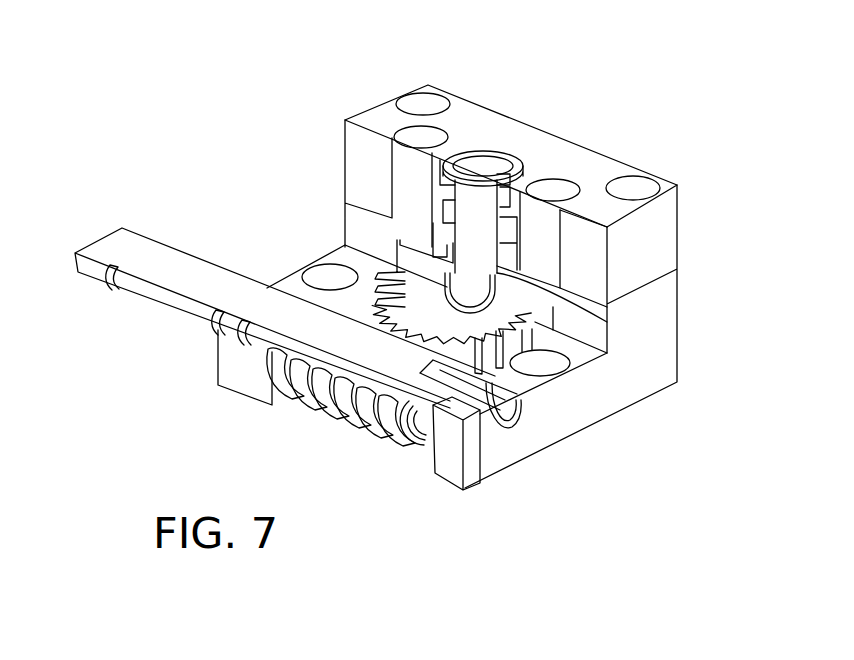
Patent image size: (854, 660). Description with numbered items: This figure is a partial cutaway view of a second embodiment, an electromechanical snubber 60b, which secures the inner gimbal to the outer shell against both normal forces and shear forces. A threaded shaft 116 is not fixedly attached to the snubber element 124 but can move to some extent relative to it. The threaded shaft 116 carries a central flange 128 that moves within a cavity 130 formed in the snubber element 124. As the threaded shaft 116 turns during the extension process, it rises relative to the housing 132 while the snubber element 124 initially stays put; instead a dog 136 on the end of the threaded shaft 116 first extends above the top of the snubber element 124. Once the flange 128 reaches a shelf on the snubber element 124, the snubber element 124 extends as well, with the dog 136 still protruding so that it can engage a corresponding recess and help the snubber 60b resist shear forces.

The electromechanical snubber 60b is at (195, 143).
The threaded shaft 116 is at (505, 160).
The snubber element 124 is at (467, 101).
The central flange 128 is at (607, 322).
The cavity 130 is at (507, 238).
The housing 132 is at (641, 368).
The dog 136 is at (473, 203).